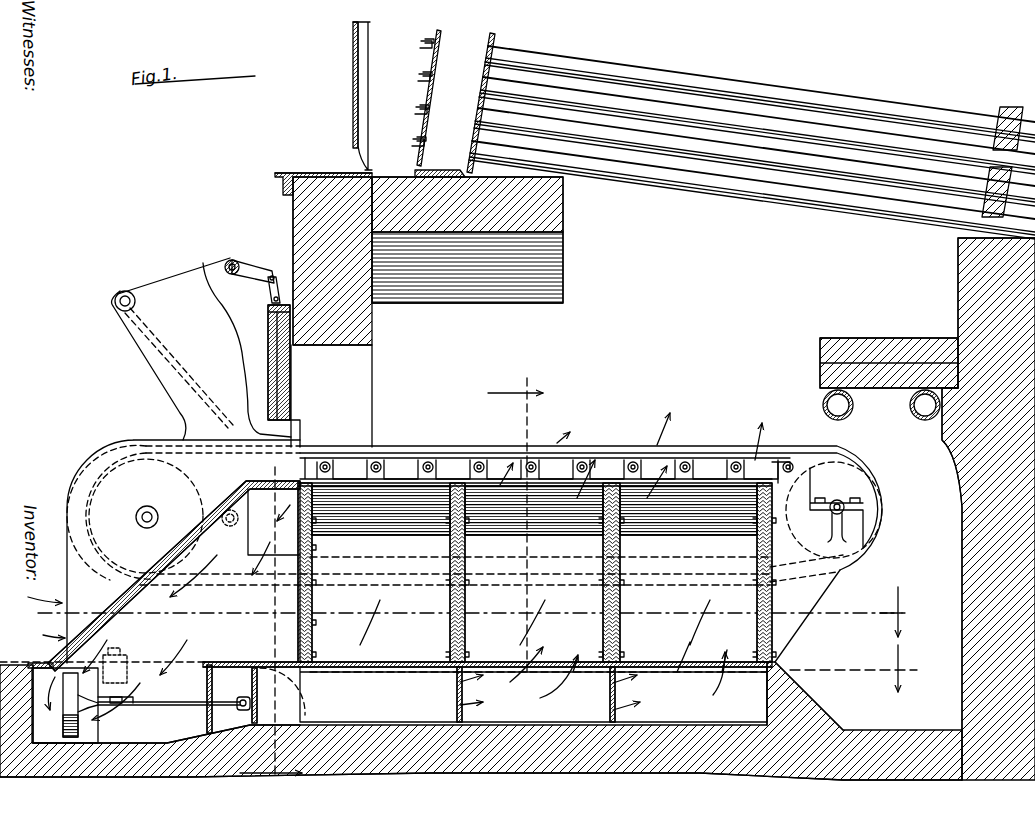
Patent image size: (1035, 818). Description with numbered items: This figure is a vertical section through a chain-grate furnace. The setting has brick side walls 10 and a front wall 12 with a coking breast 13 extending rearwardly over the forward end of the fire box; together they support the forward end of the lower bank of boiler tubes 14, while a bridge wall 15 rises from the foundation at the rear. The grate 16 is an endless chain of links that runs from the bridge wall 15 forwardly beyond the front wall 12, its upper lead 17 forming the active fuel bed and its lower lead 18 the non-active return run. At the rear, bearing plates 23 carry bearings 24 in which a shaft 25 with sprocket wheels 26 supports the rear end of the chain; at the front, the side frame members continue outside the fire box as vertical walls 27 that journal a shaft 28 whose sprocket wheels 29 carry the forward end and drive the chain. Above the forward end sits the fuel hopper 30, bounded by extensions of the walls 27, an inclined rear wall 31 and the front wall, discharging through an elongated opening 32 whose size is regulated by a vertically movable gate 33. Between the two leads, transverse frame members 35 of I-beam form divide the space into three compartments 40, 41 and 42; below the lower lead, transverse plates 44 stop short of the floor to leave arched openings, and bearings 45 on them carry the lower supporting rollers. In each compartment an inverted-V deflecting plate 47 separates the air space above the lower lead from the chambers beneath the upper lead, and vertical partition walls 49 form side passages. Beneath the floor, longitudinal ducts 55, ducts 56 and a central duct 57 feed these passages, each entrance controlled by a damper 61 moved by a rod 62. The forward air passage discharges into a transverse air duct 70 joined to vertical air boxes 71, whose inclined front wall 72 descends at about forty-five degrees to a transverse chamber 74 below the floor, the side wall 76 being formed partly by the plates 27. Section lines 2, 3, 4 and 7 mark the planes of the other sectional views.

The section line 2 is at (902, 612).
The section line 3 is at (859, 668).
The section line 4 is at (271, 631).
The section line 7 is at (515, 516).
The side walls 10 is at (838, 509).
The front wall 12 is at (362, 330).
The coking breast 13 is at (543, 210).
The boiler tubes 14 is at (751, 196).
The bridge wall 15 is at (958, 313).
The grate 16 is at (602, 447).
The upper lead 17 is at (465, 449).
The lower lead 18 is at (405, 585).
The bearing plates 23 is at (806, 580).
The bearings 24 is at (863, 507).
The shaft 25 is at (847, 499).
The sprocket wheels 26 is at (838, 500).
The vertical plates or walls 27 is at (183, 551).
The shaft 28 is at (145, 511).
The sprocket wheels 29 is at (100, 498).
The fuel hopper 30 is at (163, 278).
The rear wall 31 is at (170, 357).
The elongated opening 32 is at (282, 428).
The gate 33 is at (285, 387).
The transverse frame members 35 is at (470, 510).
The compartment 40 is at (381, 573).
The compartment 41 is at (534, 573).
The compartment 42 is at (688, 573).
The transverse plates 44 is at (468, 627).
The bearings 45 is at (297, 595).
The deflecting plate 47 is at (382, 490).
The vertical partition walls 49 is at (377, 652).
The ducts 55 is at (487, 692).
The ducts 56 is at (523, 684).
The central duct 57 is at (676, 687).
The damper 61 is at (258, 690).
The rod 62 is at (169, 692).
The transverse air duct 70 is at (250, 577).
The air boxes 71 is at (103, 644).
The front or top wall 72 is at (165, 562).
The transverse chamber 74 is at (65, 705).
The side wall 76 is at (100, 684).